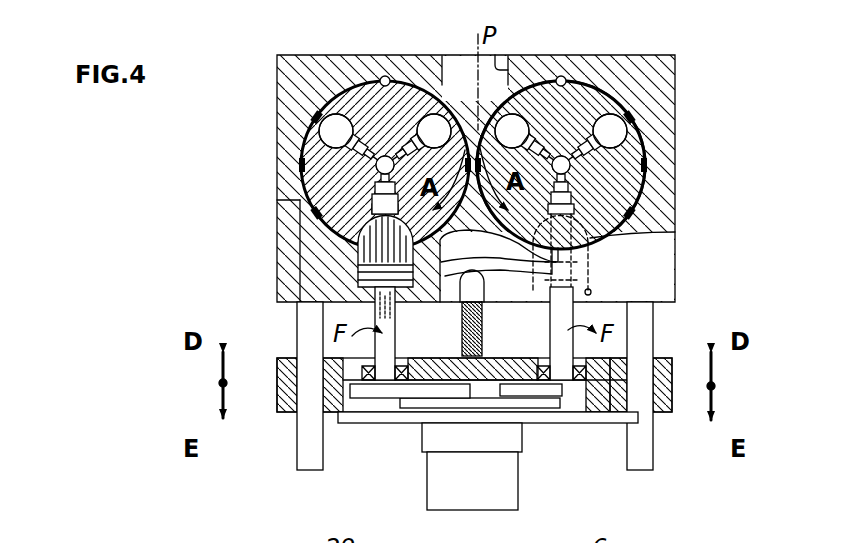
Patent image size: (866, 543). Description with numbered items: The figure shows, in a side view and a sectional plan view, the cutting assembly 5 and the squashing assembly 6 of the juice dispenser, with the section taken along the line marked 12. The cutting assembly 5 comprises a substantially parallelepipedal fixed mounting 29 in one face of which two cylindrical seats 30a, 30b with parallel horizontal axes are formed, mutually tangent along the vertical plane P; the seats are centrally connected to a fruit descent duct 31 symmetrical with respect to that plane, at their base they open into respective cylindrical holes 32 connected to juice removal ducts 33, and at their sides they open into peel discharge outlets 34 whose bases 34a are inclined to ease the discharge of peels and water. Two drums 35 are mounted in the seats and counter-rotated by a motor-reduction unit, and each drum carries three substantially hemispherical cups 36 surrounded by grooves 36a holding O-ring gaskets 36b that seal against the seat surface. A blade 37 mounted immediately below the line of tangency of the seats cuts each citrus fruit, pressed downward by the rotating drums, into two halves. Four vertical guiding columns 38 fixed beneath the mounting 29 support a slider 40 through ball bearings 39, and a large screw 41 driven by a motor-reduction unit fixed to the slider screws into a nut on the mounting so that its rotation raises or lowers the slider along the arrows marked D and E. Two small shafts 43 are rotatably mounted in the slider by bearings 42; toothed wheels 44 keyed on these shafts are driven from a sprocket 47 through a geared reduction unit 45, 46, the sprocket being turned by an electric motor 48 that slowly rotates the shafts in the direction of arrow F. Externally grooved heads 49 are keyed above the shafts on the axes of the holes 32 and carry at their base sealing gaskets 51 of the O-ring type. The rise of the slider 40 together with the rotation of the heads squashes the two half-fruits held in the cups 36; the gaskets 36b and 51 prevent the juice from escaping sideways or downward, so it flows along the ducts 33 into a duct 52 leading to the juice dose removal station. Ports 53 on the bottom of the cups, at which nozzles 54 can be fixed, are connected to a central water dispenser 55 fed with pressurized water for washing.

The cutting assembly 5 is at (684, 112).
The squashing assembly 6 is at (605, 278).
The section line 12 is at (300, 262).
The fixed mounting 29 is at (678, 88).
The cylindrical seat 30a is at (386, 80).
The cylindrical seat 30b is at (572, 85).
The fruit descent duct 31 is at (500, 58).
The cylindrical hole 32 is at (305, 304).
The juice removal duct 33 is at (374, 371).
The peel discharge outlet 34 is at (303, 150).
The base of peel discharge port 34a is at (678, 204).
The drum 35 is at (358, 88).
The hemispherical cup 36 is at (330, 140).
The groove 36a is at (320, 110).
The gasket 36b is at (330, 100).
The blade 37 is at (557, 266).
The vertical guiding column 38 is at (300, 334).
The ball bearing 39 is at (288, 393).
The slider 40 is at (672, 380).
The large screw 41 is at (482, 322).
The bearing 42 is at (402, 372).
The small shaft 43 is at (292, 392).
The toothed wheel 44 is at (575, 396).
The geared reduction unit 45 is at (502, 405).
The geared reduction unit 46 is at (503, 410).
The sprocket 47 is at (473, 402).
The electric motor 48 is at (443, 472).
The externally grooved head 49 is at (589, 257).
The sealing gasket 51 is at (277, 275).
The duct 52 is at (484, 291).
The port 53 is at (372, 186).
The nozzle 54 is at (357, 236).
The central water dispenser 55 is at (376, 165).